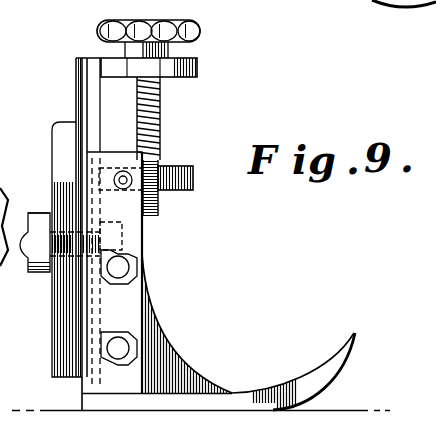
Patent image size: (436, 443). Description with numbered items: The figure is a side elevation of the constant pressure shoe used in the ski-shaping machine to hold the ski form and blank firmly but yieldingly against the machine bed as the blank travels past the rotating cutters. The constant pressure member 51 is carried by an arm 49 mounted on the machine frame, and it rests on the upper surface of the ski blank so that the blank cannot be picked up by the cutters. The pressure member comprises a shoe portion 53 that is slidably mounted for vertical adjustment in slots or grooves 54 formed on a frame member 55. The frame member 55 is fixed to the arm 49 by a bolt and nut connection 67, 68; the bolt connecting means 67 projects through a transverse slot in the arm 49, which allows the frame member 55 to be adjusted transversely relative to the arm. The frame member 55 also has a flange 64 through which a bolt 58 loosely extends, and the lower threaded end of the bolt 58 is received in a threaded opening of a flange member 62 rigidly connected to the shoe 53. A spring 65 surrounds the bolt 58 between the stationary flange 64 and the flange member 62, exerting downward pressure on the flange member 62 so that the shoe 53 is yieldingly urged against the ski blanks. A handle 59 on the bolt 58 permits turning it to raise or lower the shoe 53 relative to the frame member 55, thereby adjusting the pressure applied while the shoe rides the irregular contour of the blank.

The arm 49 is at (58, 152).
The constant pressure member 51 is at (130, 299).
The shoe portion 53 is at (245, 400).
The slots or grooves 54 is at (90, 58).
The frame member 55 is at (80, 79).
The bolt 58 is at (159, 203).
The handle 59 is at (201, 28).
The flange member 62 is at (194, 181).
The flange 64 is at (198, 66).
The spring 65 is at (161, 133).
The bolt connecting means 67 is at (115, 228).
The nut 68 is at (40, 212).